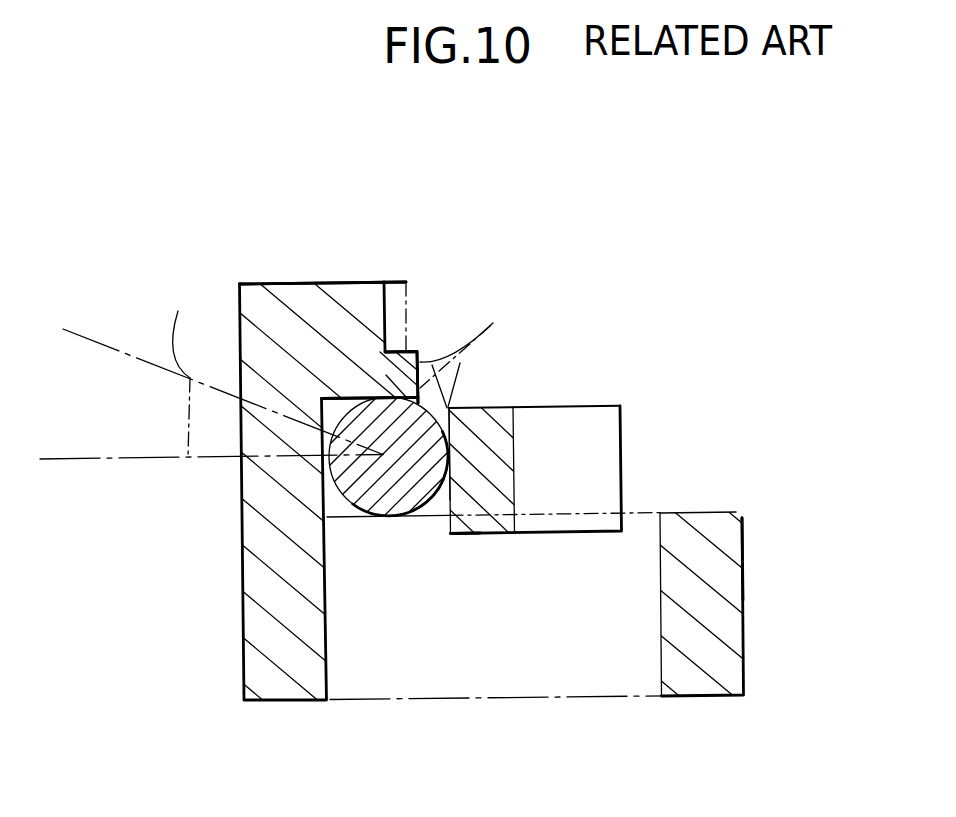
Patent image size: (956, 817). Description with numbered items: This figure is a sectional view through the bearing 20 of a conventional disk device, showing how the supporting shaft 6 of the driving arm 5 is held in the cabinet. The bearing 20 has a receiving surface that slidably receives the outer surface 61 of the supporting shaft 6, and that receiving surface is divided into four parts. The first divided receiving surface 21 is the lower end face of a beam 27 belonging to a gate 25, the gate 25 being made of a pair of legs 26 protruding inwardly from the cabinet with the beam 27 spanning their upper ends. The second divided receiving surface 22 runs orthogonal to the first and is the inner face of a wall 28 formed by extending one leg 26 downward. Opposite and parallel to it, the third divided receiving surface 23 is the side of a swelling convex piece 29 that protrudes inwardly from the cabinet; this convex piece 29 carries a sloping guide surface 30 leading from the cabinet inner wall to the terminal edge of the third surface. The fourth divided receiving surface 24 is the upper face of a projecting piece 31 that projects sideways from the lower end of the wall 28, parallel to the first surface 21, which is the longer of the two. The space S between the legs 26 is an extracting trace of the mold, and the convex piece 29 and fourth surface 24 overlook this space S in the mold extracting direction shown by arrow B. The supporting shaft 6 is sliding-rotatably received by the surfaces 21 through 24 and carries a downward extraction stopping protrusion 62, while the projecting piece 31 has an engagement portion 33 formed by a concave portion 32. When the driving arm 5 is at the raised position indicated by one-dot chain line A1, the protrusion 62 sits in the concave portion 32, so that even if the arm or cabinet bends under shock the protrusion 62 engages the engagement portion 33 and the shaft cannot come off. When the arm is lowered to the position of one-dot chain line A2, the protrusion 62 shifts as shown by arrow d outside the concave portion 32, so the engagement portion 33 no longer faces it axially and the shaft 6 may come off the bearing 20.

The driving arm 5 is at (181, 370).
The supporting shaft 6 is at (377, 518).
The bearing 20 is at (661, 437).
The first divided receiving surface 21 is at (422, 523).
The second divided receiving surface 22 is at (330, 512).
The third divided receiving surface 23 is at (450, 468).
The fourth divided receiving surface 24 is at (365, 396).
The gate 25 is at (744, 535).
The leg 26 is at (245, 632).
The beam 27 is at (447, 700).
The wall 28 is at (257, 492).
The convex piece 29 is at (552, 405).
The sloping guide surface 30 is at (585, 418).
The projecting piece 31 is at (390, 281).
The concave portion 32 is at (387, 320).
The engagement portion 33 is at (412, 285).
The outer surface 61 is at (458, 535).
The extraction stopping protrusion 62 is at (493, 325).
The one-dot chain line A1 is at (85, 463).
The one-dot chain line A2 is at (97, 336).
The mold extracting direction B is at (799, 535).
The space S is at (587, 683).
The shift of the extraction stopping protrusion d is at (450, 338).